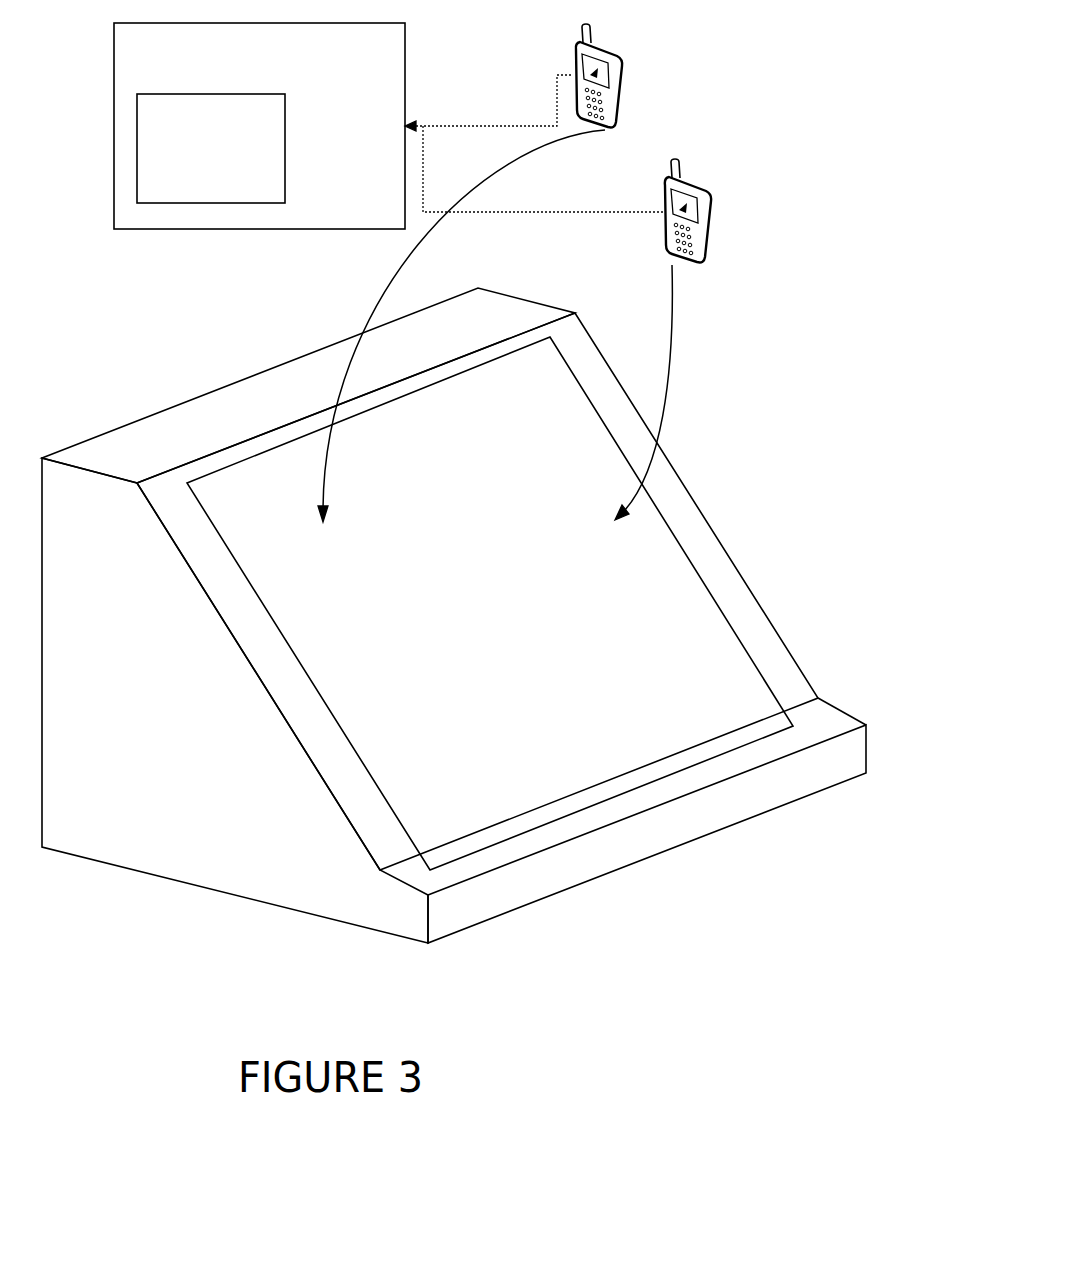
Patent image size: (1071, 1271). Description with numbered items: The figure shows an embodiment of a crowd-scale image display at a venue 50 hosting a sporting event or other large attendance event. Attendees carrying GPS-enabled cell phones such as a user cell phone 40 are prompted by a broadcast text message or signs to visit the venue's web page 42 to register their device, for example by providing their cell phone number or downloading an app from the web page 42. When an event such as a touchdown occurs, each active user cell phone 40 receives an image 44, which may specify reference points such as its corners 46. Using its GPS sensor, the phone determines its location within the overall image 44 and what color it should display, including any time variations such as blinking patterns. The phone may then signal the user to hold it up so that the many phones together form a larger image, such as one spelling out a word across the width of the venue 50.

The user cell phone 40 is at (624, 77).
The web page 42 is at (405, 63).
The image 44 is at (223, 160).
The reference points 46 is at (137, 108).
The venue 50 is at (580, 311).